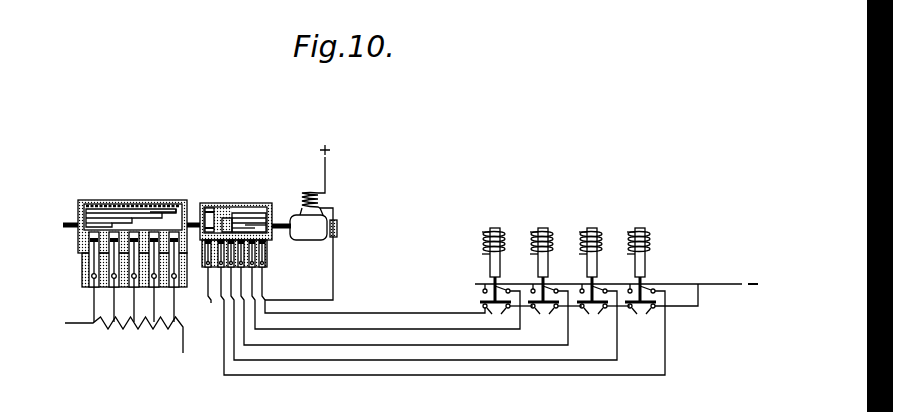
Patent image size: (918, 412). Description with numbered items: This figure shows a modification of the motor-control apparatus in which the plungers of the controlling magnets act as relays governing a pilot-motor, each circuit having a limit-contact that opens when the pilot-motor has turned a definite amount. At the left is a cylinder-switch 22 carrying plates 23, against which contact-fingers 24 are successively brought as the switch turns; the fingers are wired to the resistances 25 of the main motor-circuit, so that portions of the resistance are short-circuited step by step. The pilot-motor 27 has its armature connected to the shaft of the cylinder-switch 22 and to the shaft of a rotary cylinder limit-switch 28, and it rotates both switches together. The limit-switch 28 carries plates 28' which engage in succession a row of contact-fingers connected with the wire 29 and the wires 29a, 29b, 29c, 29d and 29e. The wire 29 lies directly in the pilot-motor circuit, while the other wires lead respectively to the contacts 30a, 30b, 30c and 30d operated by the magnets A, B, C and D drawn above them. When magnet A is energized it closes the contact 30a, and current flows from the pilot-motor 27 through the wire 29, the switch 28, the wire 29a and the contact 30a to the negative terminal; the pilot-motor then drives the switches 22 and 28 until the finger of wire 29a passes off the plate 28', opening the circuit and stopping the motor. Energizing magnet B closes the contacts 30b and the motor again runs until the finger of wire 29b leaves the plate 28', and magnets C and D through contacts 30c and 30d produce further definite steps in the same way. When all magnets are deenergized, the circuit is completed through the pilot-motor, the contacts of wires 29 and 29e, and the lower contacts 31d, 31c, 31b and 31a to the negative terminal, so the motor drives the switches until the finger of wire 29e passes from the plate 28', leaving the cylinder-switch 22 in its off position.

The cylinder-switch 22 is at (132, 233).
The plates 23 is at (158, 205).
The contact-fingers 24 is at (115, 255).
The resistances 25 is at (124, 316).
The pilot-motor 27 is at (311, 232).
The rotary cylinder limit-switch 28 is at (236, 226).
The plates 28' is at (270, 200).
The wire 29 is at (229, 280).
The wire 29a is at (238, 375).
The wire 29b is at (295, 360).
The wire 29c is at (355, 345).
The wire 29d is at (385, 328).
The wire 29e is at (431, 313).
The contact 30a is at (653, 284).
The contacts 30b is at (604, 284).
The contact 30c is at (557, 284).
The contact 30d is at (487, 284).
The contact 31a is at (642, 316).
The contact 31b is at (594, 316).
The contact 31c is at (545, 316).
The contact 31d is at (498, 316).